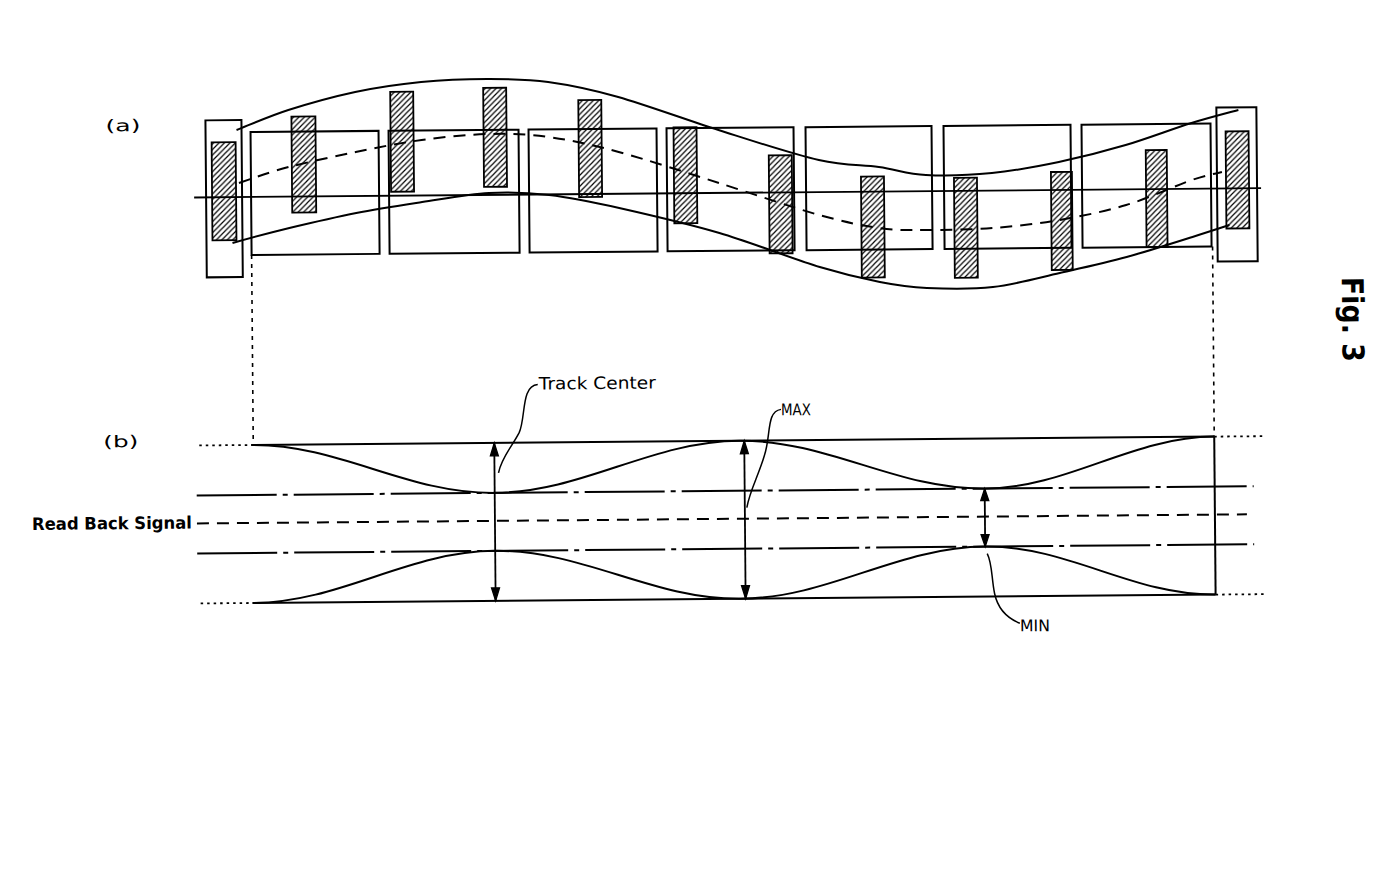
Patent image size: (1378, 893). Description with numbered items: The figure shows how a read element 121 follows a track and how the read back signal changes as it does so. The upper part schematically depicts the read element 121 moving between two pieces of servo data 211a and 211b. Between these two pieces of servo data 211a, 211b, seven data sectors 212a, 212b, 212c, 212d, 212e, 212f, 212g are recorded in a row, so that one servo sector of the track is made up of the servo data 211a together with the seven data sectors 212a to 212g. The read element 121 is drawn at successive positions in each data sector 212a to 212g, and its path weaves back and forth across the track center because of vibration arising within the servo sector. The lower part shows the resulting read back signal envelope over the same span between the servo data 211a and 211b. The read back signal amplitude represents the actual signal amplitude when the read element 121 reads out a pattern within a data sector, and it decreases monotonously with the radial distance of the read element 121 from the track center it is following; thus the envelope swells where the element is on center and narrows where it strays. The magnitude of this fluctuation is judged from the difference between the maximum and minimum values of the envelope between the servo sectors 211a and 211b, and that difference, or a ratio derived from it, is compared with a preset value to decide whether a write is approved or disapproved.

The read element 121 is at (400, 94).
The servo data 211a is at (225, 120).
The servo data 211b is at (1242, 117).
The data sector 212a is at (333, 256).
The data sector 212b is at (472, 257).
The data sector 212c is at (613, 256).
The data sector 212d is at (722, 257).
The data sector 212e is at (903, 133).
The data sector 212f is at (1045, 130).
The data sector 212g is at (1173, 128).